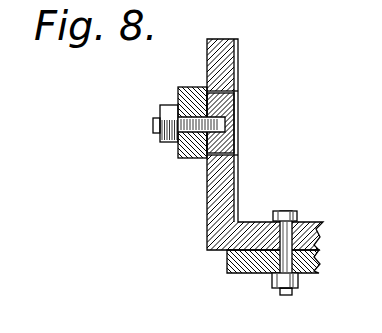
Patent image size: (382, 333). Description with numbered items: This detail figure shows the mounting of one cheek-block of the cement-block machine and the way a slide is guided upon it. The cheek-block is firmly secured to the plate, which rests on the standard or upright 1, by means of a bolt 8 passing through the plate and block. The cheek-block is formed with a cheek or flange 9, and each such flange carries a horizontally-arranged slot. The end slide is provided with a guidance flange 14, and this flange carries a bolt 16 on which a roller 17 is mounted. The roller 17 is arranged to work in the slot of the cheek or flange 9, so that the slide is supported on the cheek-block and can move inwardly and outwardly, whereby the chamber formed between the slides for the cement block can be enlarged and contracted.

The standard or upright 1 is at (354, 272).
The bolt 8 is at (295, 212).
The cheek or flange 9 is at (228, 64).
The flange 14 is at (179, 89).
The bolt 16 is at (165, 115).
The roller 17 is at (222, 108).